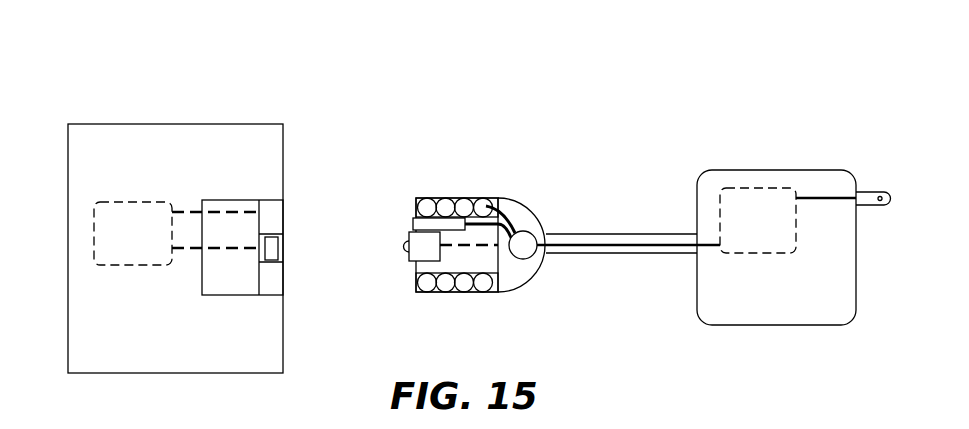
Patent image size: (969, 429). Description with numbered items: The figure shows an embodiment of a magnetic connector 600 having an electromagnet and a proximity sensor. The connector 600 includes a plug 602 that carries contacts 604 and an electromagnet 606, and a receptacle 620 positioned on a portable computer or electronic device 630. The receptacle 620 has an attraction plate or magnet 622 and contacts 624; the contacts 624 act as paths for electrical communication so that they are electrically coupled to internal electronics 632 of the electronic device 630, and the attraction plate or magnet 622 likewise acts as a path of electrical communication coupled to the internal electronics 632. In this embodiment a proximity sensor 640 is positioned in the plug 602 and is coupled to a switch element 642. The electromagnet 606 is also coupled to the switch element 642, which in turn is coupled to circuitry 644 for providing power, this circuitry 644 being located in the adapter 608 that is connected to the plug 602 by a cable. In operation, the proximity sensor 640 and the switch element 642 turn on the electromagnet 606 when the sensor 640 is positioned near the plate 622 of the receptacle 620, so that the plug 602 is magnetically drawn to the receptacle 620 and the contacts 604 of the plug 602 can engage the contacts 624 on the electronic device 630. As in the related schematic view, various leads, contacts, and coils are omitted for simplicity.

The magnetic connector 600 is at (619, 204).
The plug 602 is at (473, 234).
The contacts 604 is at (405, 244).
The electromagnet 606 is at (441, 198).
The adapter 608 is at (794, 228).
The receptacle 620 is at (282, 246).
The attraction plate or magnet 622 is at (285, 280).
The contacts 624 is at (284, 251).
The electronic device 630 is at (83, 124).
The internal electronics 632 is at (133, 233).
The proximity sensor 640 is at (413, 222).
The switch element 642 is at (538, 254).
The circuitry 644 is at (758, 220).